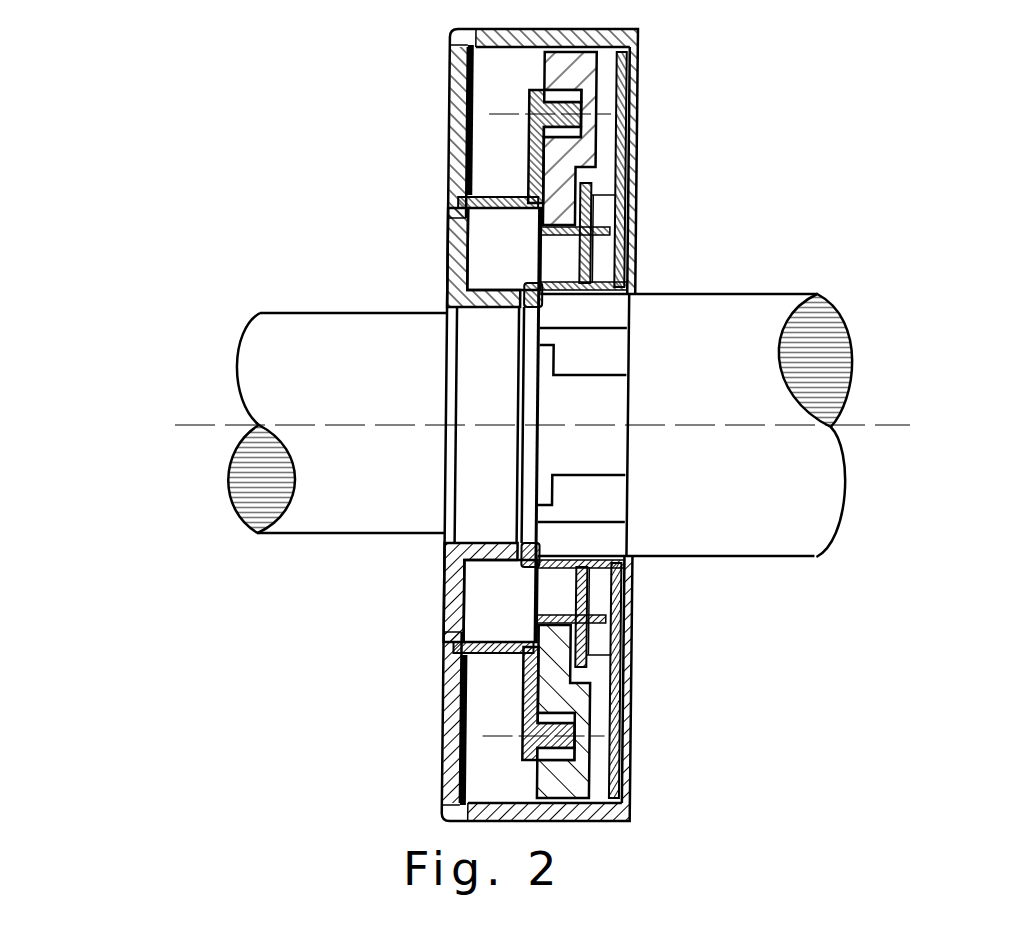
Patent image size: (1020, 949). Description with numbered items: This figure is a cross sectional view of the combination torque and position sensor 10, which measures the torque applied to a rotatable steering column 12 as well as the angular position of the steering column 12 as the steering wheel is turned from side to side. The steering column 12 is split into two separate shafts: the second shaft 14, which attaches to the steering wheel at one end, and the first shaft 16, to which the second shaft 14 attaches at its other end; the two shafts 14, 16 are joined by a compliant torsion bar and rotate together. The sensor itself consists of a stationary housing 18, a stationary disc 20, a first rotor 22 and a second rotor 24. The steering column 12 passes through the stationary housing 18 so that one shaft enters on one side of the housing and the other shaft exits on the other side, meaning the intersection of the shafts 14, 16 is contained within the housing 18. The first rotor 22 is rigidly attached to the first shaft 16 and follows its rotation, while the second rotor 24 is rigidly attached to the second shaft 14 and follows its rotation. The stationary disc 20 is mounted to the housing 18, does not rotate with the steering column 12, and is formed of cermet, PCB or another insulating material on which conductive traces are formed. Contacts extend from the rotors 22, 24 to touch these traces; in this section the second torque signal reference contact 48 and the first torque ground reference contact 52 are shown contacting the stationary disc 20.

The combination torque and position sensor 10 is at (420, 168).
The steering column 12 is at (228, 410).
The second shaft 14 is at (345, 540).
The first shaft 16 is at (738, 565).
The stationary housing 18 is at (628, 770).
The stationary disc 20 is at (600, 820).
The first rotor 22 is at (630, 617).
The second rotor 24 is at (548, 703).
The second torque signal reference contact 48 is at (630, 710).
The first torque ground reference contact 52 is at (600, 190).